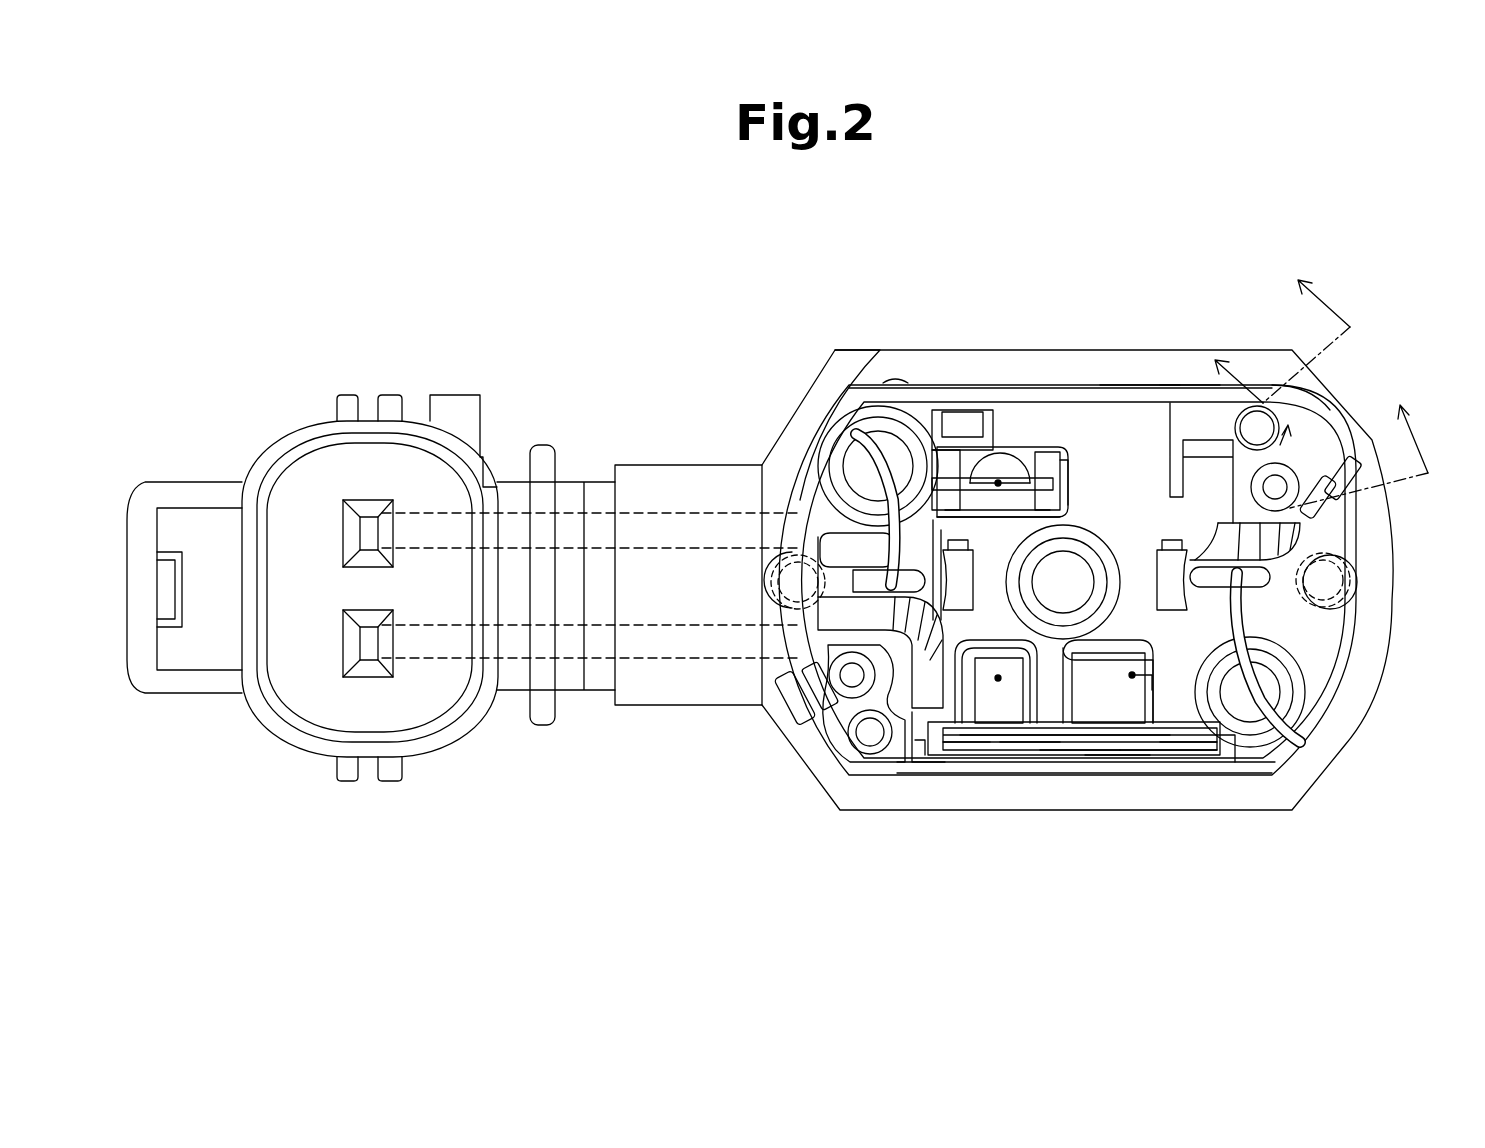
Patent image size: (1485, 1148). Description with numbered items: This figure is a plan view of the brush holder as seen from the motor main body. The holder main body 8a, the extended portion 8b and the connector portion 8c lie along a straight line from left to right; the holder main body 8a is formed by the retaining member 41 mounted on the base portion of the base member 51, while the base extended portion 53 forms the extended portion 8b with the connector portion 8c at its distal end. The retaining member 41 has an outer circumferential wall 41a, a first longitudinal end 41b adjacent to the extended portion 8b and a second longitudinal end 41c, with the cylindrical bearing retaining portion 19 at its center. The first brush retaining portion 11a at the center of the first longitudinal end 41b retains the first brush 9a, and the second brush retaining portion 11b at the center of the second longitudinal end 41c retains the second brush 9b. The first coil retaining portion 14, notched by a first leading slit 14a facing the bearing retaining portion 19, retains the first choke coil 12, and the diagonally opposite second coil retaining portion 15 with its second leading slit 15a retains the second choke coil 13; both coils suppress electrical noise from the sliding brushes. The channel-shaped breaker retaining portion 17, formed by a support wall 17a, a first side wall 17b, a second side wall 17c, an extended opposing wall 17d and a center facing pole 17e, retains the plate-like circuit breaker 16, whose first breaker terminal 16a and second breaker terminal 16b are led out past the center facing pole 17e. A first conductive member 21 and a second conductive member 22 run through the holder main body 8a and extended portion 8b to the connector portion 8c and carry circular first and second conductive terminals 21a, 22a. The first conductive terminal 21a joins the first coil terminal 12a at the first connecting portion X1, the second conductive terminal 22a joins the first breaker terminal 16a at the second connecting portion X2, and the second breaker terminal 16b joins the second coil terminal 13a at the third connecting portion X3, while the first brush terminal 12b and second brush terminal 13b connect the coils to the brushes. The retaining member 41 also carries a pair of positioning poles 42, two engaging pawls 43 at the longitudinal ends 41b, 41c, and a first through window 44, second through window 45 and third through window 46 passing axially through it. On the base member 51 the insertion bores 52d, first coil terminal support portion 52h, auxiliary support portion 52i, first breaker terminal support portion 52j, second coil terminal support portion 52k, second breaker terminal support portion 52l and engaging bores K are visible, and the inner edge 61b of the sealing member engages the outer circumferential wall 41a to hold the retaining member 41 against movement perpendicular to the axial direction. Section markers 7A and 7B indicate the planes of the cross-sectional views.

The holder main body 8a is at (1066, 306).
The extended portion 8b is at (670, 445).
The connector portion 8c is at (374, 358).
The first brush 9a is at (960, 578).
The second brush 9b is at (1173, 547).
The first brush retaining portion 11a is at (790, 530).
The second brush retaining portion 11b is at (1345, 612).
The first choke coil 12 is at (815, 455).
The first coil terminal 12a is at (1030, 483).
The first brush terminal 12b is at (890, 556).
The second choke coil 13 is at (1290, 722).
The second coil terminal 13a is at (1100, 762).
The second brush terminal 13b is at (1280, 752).
The first coil retaining portion 14 is at (872, 424).
The first leading slit 14a is at (895, 383).
The second coil retaining portion 15 is at (1300, 660).
The second leading slit 15a is at (1285, 688).
The circuit breaker 16 is at (1088, 728).
The first breaker terminal 16a is at (1000, 728).
The second breaker terminal 16b is at (1145, 730).
The breaker retaining portion 17 is at (955, 762).
The support wall 17a is at (1020, 762).
The first side wall 17b is at (903, 762).
The second side wall 17c is at (1210, 765).
The extended opposing wall 17d is at (1180, 762).
The center facing pole 17e is at (1062, 762).
The bearing retaining portion 19 is at (1070, 555).
The first conductive member 21 is at (655, 502).
The first conductive terminal 21a is at (985, 455).
The second conductive member 22 is at (655, 668).
The second conductive terminal 22a is at (950, 762).
The retaining member 41 is at (1091, 377).
The outer circumferential wall 41a is at (1143, 392).
The first longitudinal end 41b is at (832, 425).
The second longitudinal end 41c is at (1310, 388).
The positioning poles 42 is at (770, 563).
The engaging pawls 43 is at (790, 715).
The first through window 44 is at (1000, 518).
The second through window 45 is at (992, 640).
The third through window 46 is at (1086, 625).
The base member 51 is at (600, 478).
The insertion bores 52d is at (790, 605).
The first coil terminal support portion 52h is at (950, 440).
The auxiliary support portion 52i is at (1072, 463).
The first breaker terminal support portion 52j is at (1035, 762).
The second coil terminal support portion 52k is at (1230, 608).
The second breaker terminal support portion 52l is at (1158, 762).
The base extended portion 53 is at (568, 697).
The inner edge 61b is at (1185, 395).
The engaging bores K is at (1357, 422).
The first connecting portion X1 is at (1005, 455).
The second connecting portion X2 is at (998, 684).
The third connecting portion X3 is at (1132, 668).
The section line 7A is at (1350, 446).
The section line 7B is at (1268, 328).